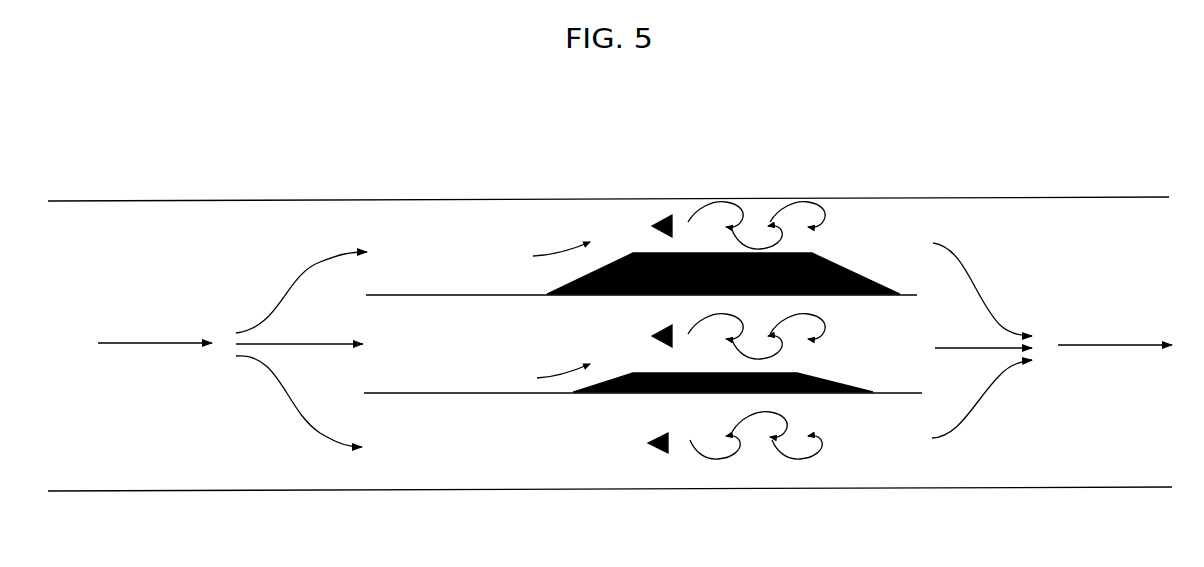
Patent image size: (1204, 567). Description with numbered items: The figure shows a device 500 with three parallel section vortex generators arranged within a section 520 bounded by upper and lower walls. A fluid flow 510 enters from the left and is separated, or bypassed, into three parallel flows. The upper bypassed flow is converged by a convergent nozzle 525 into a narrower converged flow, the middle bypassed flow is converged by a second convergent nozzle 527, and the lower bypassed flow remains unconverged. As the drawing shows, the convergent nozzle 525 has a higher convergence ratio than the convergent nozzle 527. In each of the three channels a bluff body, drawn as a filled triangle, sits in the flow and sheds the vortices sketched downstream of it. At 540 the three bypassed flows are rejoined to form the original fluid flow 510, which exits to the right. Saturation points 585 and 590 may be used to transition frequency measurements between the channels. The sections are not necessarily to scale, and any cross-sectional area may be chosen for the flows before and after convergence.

The device 500 is at (358, 117).
The fluid flow 510 is at (128, 343).
The section 520 is at (195, 200).
The convergent nozzle 525 is at (575, 296).
The convergent nozzle 527 is at (605, 393).
The rejoining location 540 is at (982, 283).
The saturation point 585 is at (494, 564).
The saturation point 590 is at (614, 564).